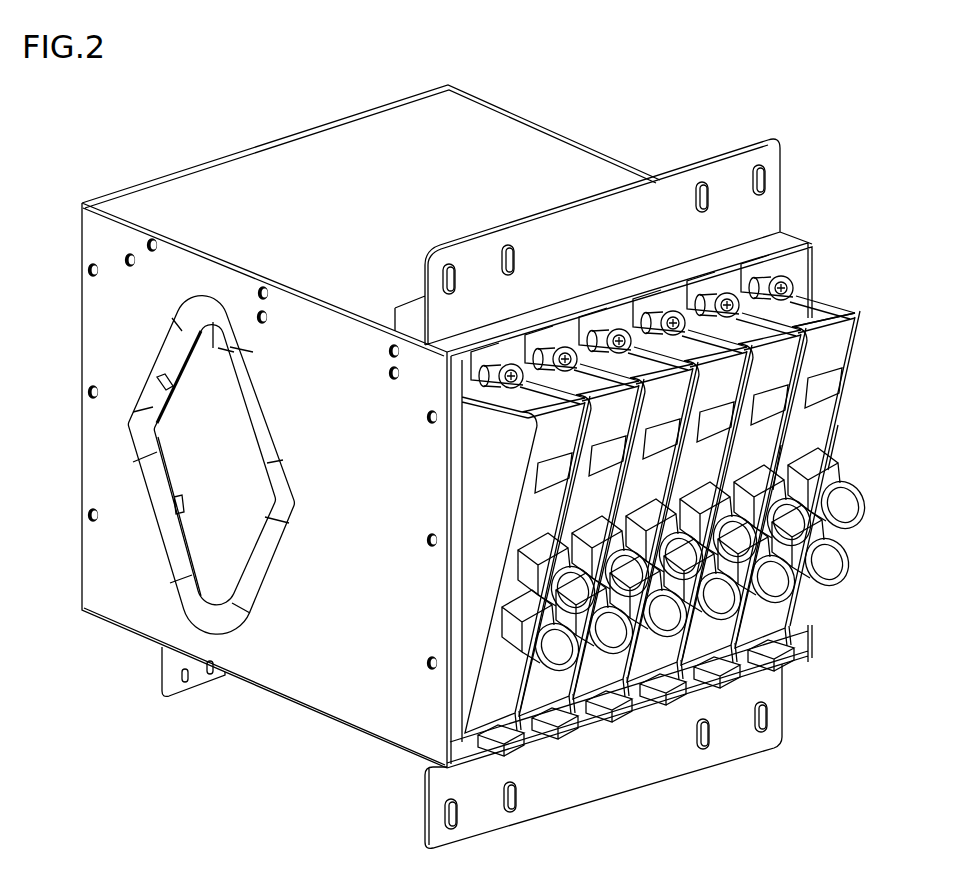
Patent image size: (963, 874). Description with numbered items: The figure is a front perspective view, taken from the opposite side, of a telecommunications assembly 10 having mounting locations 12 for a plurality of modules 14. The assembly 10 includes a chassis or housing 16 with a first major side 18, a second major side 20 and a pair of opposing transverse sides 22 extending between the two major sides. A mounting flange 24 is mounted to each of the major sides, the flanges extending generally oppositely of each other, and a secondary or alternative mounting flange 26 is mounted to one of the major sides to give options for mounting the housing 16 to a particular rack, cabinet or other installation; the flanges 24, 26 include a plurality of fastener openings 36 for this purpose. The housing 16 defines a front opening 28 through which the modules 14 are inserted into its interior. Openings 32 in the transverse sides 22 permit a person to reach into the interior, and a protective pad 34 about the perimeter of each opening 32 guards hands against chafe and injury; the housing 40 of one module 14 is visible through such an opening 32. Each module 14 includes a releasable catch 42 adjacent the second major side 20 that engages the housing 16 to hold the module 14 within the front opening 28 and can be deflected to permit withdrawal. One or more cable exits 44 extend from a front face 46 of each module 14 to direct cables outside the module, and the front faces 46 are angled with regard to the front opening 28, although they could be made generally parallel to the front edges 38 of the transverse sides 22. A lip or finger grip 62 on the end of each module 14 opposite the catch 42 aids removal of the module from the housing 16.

The telecommunications assembly 10 is at (297, 80).
The mounting locations 12 is at (767, 267).
The modules 14 is at (573, 455).
The housing 16 is at (240, 152).
The first major side 18 is at (473, 176).
The second major side 20 is at (308, 713).
The transverse sides 22 is at (525, 127).
The mounting flange 24 is at (620, 253).
The alternative mounting flange 26 is at (170, 690).
The front opening 28 is at (468, 652).
The openings 32 is at (150, 395).
The protective pad 34 is at (143, 455).
The fastener openings 36 is at (178, 675).
The front edges 38 is at (443, 463).
The housing 40 is at (197, 390).
The releasable catch 42 is at (580, 735).
The cable exits 44 is at (523, 633).
The front face 46 is at (830, 418).
The finger grip 62 is at (850, 325).